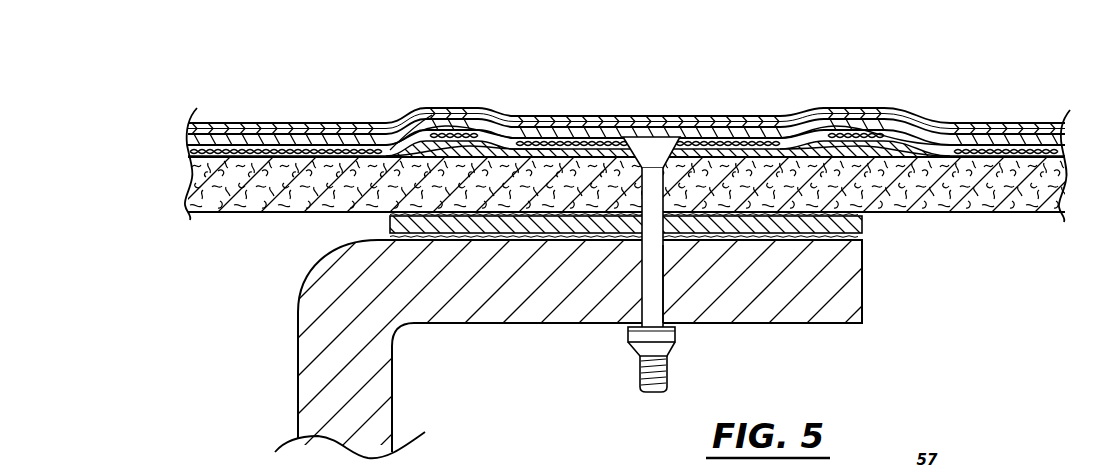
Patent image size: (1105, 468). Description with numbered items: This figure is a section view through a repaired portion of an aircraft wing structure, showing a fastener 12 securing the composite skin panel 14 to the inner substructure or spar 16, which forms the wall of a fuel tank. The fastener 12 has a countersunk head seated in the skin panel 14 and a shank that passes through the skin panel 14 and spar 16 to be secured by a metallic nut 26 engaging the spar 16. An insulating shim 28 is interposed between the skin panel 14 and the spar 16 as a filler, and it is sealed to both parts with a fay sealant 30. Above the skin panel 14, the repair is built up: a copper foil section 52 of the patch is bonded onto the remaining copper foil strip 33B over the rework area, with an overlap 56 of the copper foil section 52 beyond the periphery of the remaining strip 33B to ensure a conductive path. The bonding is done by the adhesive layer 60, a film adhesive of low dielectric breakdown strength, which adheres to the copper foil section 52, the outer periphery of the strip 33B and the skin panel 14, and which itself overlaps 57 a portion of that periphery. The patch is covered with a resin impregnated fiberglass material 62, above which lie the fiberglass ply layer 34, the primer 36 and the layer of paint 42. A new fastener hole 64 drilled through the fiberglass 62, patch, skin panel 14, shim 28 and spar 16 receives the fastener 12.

The fastener 12 is at (650, 187).
The skin panel 14 is at (190, 180).
The spar 16 is at (303, 398).
The metallic nut 26 is at (628, 344).
The shim 28 is at (864, 236).
The fay sealant 30 is at (864, 213).
The remaining copper foil strip 33B is at (517, 137).
The fiberglass ply layer 34 is at (190, 153).
The primer 36 is at (188, 139).
The layer of paint 42 is at (188, 126).
The copper foil section 52 is at (470, 150).
The overlap 56 is at (462, 148).
The overlap of film adhesive 57 is at (462, 150).
The adhesive layer 60 is at (435, 115).
The resin impregnated fiberglass material 62 is at (512, 148).
The new fastener hole 64 is at (668, 274).